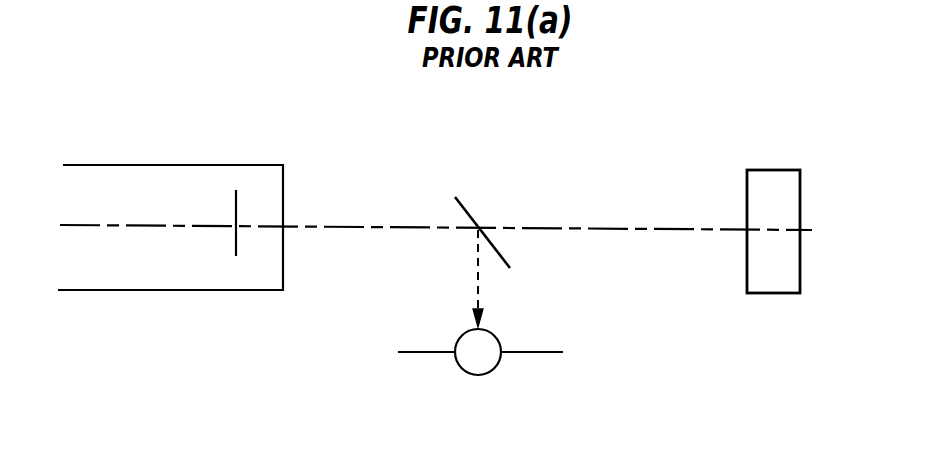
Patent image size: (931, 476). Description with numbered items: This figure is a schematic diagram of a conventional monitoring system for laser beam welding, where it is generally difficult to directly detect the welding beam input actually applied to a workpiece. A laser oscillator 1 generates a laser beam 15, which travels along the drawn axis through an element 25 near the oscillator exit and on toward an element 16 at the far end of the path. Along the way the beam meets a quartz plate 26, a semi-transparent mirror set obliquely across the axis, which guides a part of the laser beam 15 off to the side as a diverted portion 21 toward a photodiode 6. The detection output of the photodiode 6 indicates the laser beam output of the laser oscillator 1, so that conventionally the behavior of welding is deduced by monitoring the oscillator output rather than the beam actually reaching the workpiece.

The laser oscillator 1 is at (117, 193).
The aperture 25 is at (237, 203).
The quartz plate (semi-transparent mirror) 26 is at (466, 206).
The laser beam 15 is at (537, 227).
The recording medium 16 is at (775, 170).
The reflected light beam 21 is at (480, 282).
The photodiode 6 is at (491, 372).